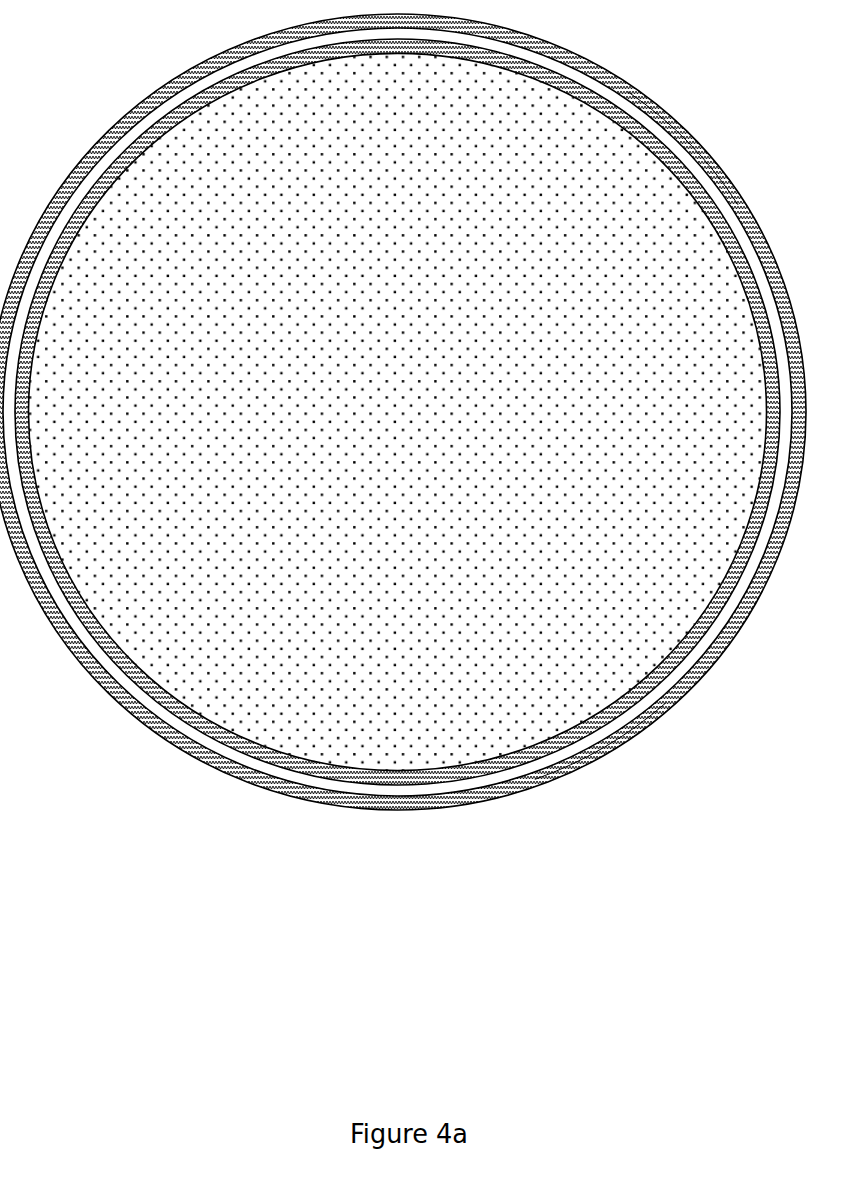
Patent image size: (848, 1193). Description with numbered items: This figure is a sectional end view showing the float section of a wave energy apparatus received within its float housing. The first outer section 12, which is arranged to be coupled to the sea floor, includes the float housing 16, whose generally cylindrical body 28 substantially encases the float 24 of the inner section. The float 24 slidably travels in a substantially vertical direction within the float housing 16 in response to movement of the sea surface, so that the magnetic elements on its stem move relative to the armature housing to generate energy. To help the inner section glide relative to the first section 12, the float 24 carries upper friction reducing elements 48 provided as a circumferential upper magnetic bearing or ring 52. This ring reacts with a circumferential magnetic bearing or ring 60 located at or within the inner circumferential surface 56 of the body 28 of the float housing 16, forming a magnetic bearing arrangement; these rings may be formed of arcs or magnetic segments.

The first outer section 12 is at (403, 438).
The float housing 16 is at (403, 438).
The cylindrical body 28 is at (122, 713).
The float 24 is at (407, 351).
The friction reducing elements 48 is at (397, 412).
The upper magnetic bearing 52 is at (768, 437).
The inner circumferential surface 56 is at (608, 752).
The magnetic bearing 60 is at (693, 140).